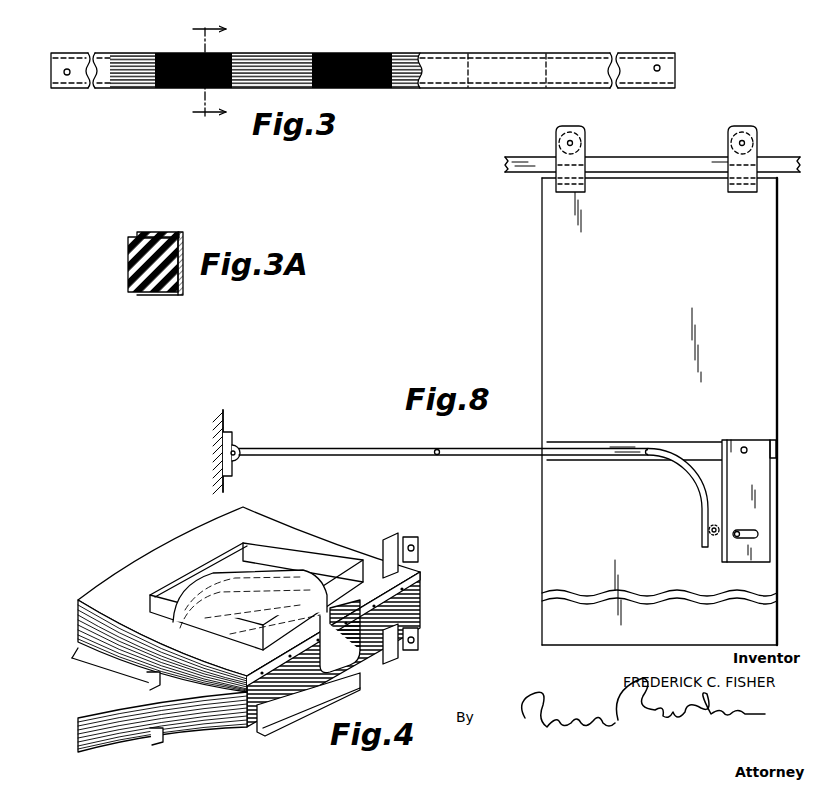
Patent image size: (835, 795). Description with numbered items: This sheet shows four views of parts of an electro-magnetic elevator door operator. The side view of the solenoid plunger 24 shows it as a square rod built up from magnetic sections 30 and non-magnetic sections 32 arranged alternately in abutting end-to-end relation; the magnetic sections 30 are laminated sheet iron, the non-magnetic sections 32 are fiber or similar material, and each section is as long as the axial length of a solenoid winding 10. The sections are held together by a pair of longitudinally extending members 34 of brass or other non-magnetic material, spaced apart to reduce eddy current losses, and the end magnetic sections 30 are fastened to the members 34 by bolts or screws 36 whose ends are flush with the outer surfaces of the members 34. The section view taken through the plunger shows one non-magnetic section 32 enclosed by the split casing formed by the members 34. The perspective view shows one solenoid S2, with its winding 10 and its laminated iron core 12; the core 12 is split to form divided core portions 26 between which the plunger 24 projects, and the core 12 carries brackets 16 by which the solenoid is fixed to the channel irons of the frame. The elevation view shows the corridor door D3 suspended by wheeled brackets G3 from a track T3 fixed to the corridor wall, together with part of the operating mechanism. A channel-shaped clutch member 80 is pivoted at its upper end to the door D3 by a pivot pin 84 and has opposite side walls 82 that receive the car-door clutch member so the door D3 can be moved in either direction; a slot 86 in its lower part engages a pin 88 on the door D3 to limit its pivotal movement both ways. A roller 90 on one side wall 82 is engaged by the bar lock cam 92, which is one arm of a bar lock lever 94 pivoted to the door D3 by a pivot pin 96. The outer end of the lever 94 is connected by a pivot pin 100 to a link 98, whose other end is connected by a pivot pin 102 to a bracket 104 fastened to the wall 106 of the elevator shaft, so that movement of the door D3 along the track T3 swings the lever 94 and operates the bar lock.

In FIG. 4, the winding 10 is at (287, 573).
In FIG. 4, the laminated iron core 12 is at (262, 712).
In FIG. 4, the bracket 16 is at (420, 554).
In FIG. 3, the solenoid plunger 24 is at (480, 92).
In FIG. 4, the divided core portion 26 is at (97, 722).
In FIG. 3, the magnetic section 30 is at (271, 63).
In FIG. 3, the non-magnetic section 32 is at (350, 55).
In FIG. 3A, the non-magnetic section 32 is at (147, 236).
In FIG. 3, the longitudinally extending member 34 is at (76, 62).
In FIG. 3A, the longitudinally extending member 34 is at (184, 240).
In FIG. 3, the bolt or screw 36 is at (66, 77).
In FIG. 8, the clutch member 80 is at (772, 507).
In FIG. 8, the side wall 82 is at (728, 482).
In FIG. 8, the pivot pin 84 is at (748, 450).
In FIG. 8, the slot 86 is at (758, 536).
In FIG. 8, the pin 88 is at (741, 532).
In FIG. 8, the roller 90 is at (712, 536).
In FIG. 8, the bar lock cam 92 is at (688, 495).
In FIG. 8, the bar lock lever 94 is at (503, 447).
In FIG. 8, the pivot pin 96 is at (650, 449).
In FIG. 8, the link 98 is at (348, 452).
In FIG. 8, the pivot pin 100 is at (437, 456).
In FIG. 8, the pivot pin 102 is at (240, 451).
In FIG. 8, the bracket 104 is at (233, 440).
In FIG. 8, the wall 106 is at (225, 420).
In FIG. 8, the corridor door D3 is at (560, 264).
In FIG. 8, the wheeled bracket G3 is at (586, 137).
In FIG. 8, the track T3 is at (690, 157).
In FIG. 4, the solenoid S2 is at (320, 548).